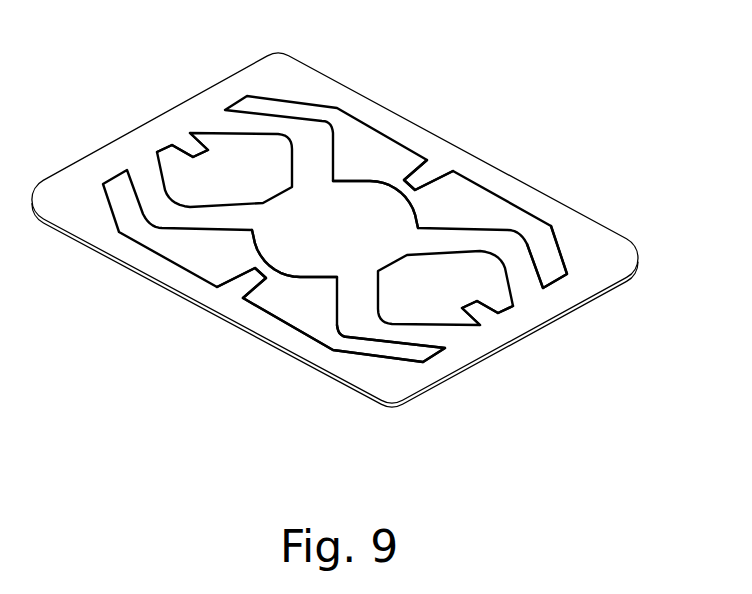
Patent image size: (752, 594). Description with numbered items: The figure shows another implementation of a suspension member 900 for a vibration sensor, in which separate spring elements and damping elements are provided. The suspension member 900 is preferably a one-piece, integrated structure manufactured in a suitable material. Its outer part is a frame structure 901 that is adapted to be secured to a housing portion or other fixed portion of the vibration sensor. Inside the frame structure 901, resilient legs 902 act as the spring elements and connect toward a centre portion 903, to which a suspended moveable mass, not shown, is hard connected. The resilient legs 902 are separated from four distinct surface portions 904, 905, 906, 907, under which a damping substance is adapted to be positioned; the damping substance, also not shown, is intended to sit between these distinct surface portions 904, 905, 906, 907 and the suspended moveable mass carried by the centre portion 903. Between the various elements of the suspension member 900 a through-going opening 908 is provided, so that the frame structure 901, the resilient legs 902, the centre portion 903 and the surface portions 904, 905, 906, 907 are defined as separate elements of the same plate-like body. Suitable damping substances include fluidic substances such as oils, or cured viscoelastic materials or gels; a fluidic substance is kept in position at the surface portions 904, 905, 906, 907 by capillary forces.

The suspension member 900 is at (389, 219).
The frame structure 901 is at (622, 255).
The resilient legs 902 is at (515, 247).
The centre portion 903 is at (358, 207).
The distinct surface portion 904 is at (485, 315).
The distinct surface portion 905 is at (185, 147).
The distinct surface portion 906 is at (430, 177).
The distinct surface portion 907 is at (243, 285).
The through-going opening 908 is at (293, 308).